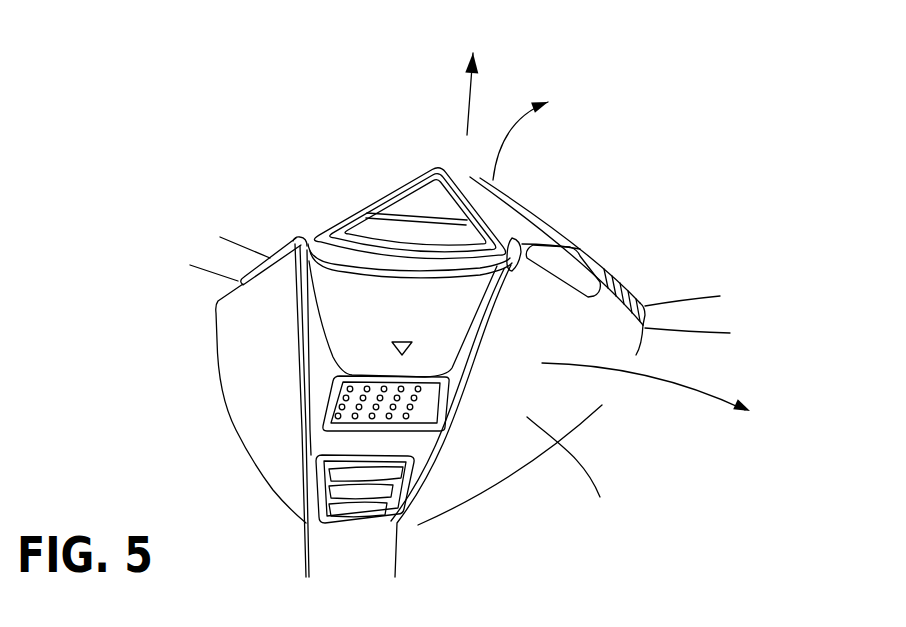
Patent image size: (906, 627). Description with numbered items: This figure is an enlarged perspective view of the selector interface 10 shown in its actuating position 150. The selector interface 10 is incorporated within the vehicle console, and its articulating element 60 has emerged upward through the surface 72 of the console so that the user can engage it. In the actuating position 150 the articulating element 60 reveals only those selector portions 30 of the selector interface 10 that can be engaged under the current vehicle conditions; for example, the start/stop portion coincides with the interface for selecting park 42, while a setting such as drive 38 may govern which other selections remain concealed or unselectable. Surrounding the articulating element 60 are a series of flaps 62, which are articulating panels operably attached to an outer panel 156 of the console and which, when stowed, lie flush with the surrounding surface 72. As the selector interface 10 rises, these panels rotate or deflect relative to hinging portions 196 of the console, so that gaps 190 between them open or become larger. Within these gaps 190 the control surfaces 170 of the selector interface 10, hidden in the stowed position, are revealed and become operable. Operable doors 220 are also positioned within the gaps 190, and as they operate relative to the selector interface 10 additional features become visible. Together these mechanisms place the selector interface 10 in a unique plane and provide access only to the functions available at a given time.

The selector interface 10 is at (542, 168).
The selector portions 30 is at (443, 150).
The drive 38 is at (450, 300).
The park 42 is at (503, 216).
The articulating element 60 is at (337, 200).
The flaps 62 is at (573, 473).
The surface 72 is at (260, 364).
The actuating position 150 is at (275, 392).
The outer panel 156 is at (588, 428).
The control surfaces 170 is at (350, 237).
The gaps 190 is at (334, 438).
The hinging portions 196 is at (488, 487).
The doors 220 is at (348, 503).